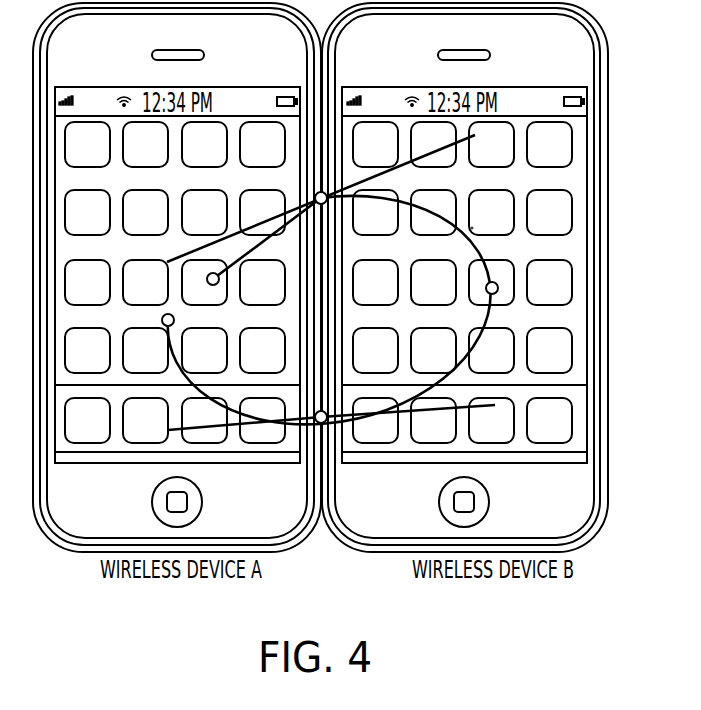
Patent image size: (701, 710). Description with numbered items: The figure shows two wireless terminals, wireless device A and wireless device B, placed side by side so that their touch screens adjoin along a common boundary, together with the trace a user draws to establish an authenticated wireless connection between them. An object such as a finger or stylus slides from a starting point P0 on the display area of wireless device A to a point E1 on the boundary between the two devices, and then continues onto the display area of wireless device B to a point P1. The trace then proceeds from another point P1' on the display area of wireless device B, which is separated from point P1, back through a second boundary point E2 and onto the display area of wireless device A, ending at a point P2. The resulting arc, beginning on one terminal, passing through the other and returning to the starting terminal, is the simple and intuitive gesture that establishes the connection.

The point E1 on the boundary E1 is at (314, 193).
The point E2 on the boundary E2 is at (294, 389).
The point P0 on the display area of wireless device A P0 is at (219, 280).
The point P1 on the display area of wireless device B P1 is at (501, 196).
The point P1' on the display area of wireless device B P1' is at (505, 317).
The point P2 on the display area of wireless device A P2 is at (174, 320).